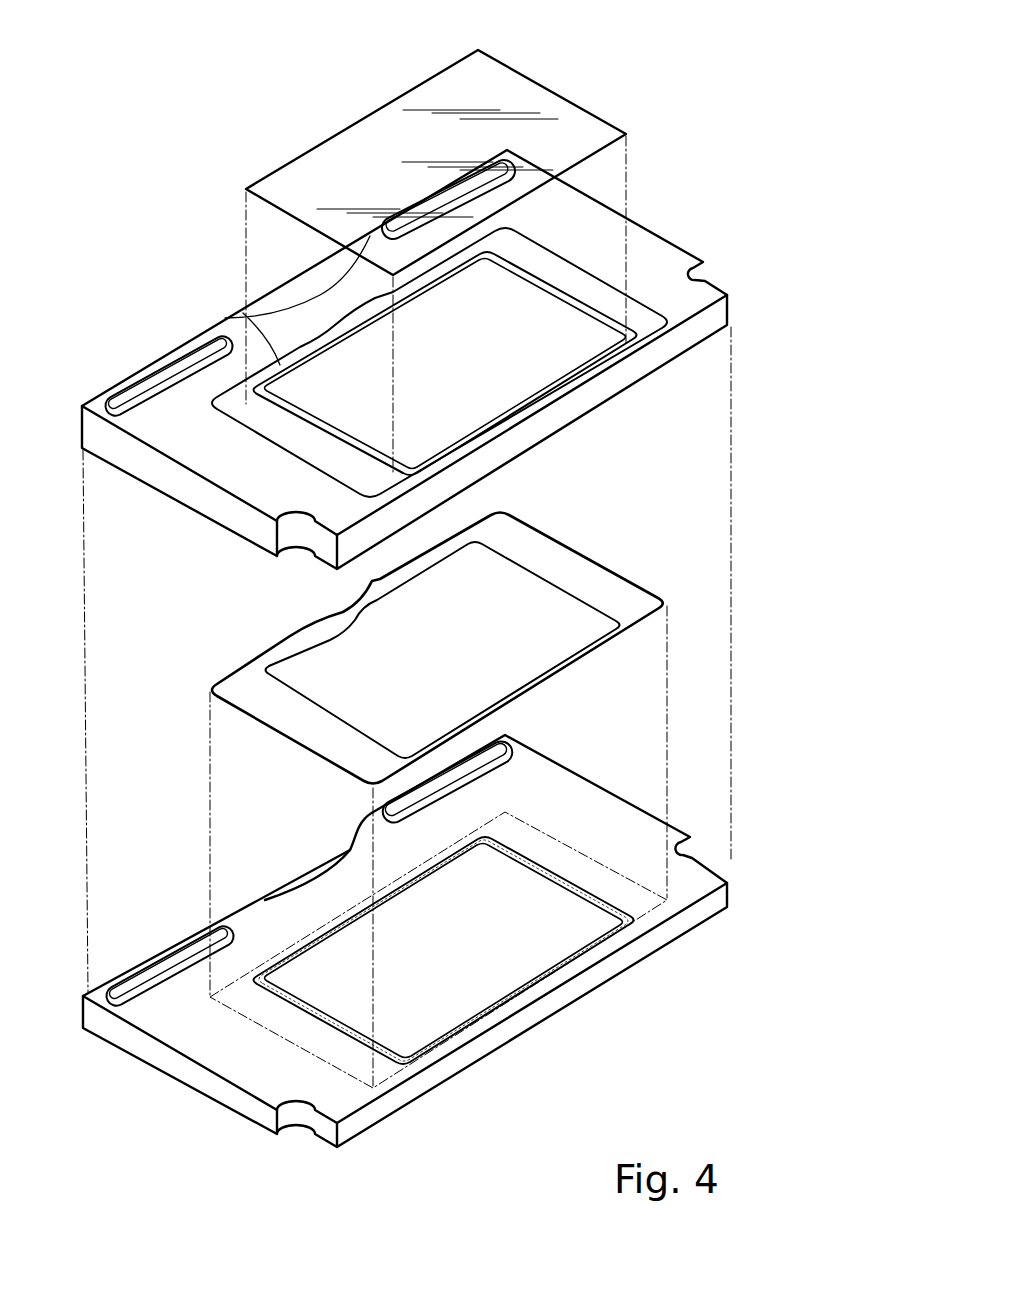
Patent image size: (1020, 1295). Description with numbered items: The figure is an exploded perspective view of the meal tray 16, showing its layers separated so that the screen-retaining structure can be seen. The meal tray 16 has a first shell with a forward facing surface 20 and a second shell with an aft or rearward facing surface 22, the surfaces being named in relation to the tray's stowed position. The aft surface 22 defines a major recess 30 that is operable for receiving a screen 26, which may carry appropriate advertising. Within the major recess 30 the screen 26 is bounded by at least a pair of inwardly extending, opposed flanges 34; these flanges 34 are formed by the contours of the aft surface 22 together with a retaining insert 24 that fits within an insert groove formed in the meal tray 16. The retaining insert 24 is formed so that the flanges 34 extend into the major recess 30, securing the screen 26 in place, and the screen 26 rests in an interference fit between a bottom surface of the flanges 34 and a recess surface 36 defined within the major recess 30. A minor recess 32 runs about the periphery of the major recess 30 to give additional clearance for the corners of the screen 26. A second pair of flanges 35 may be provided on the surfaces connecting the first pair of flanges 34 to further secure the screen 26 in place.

The meal tray 16 is at (780, 956).
The forward facing surface 20 is at (673, 837).
The aft or rearward facing surface 22 is at (675, 257).
The retaining insert 24 is at (632, 598).
The screen 26 is at (485, 72).
The major recess 30 is at (325, 950).
The minor recess 32 is at (260, 977).
The flanges 34 is at (325, 438).
The second pair of flanges 35 is at (243, 313).
The recess surface 36 is at (510, 327).